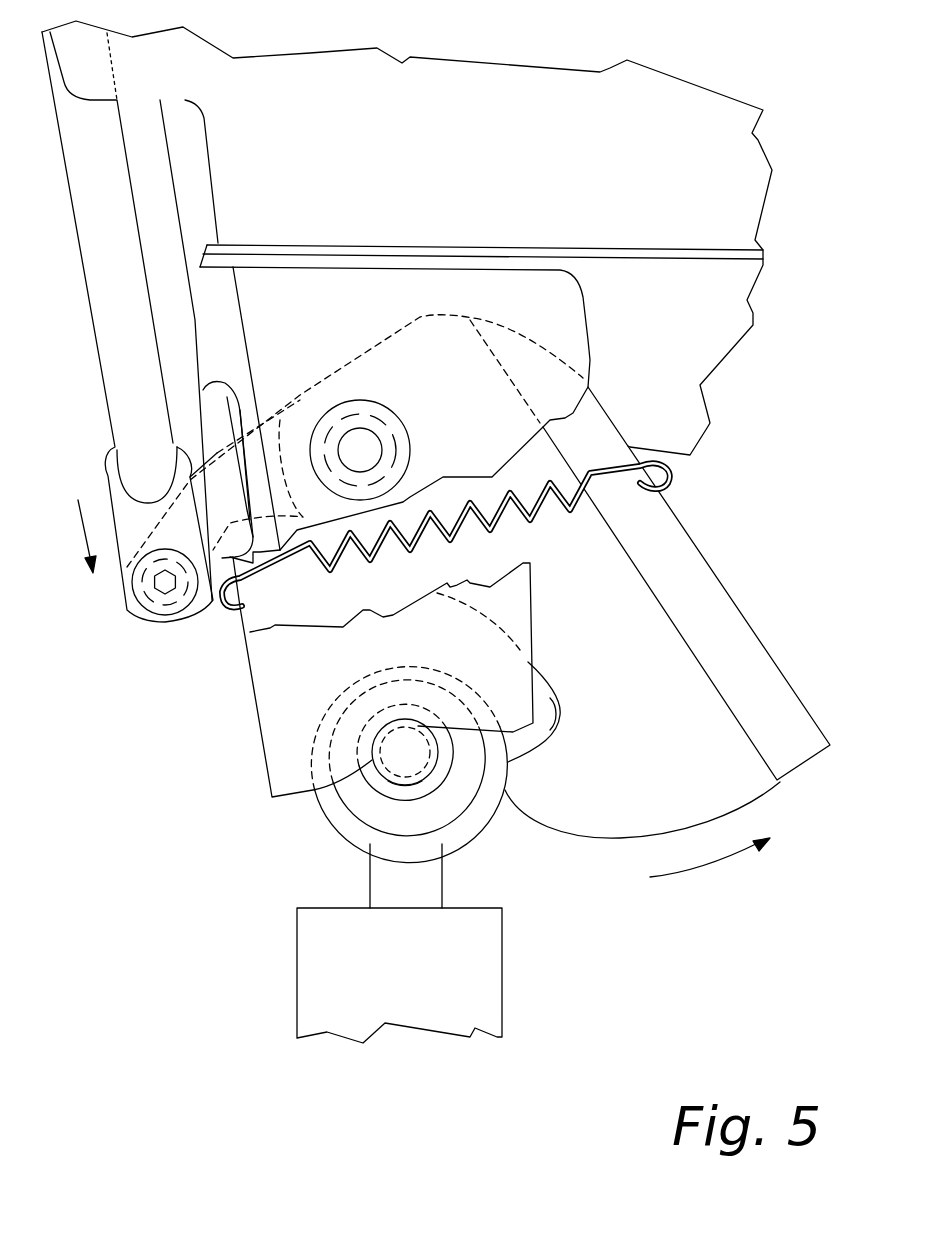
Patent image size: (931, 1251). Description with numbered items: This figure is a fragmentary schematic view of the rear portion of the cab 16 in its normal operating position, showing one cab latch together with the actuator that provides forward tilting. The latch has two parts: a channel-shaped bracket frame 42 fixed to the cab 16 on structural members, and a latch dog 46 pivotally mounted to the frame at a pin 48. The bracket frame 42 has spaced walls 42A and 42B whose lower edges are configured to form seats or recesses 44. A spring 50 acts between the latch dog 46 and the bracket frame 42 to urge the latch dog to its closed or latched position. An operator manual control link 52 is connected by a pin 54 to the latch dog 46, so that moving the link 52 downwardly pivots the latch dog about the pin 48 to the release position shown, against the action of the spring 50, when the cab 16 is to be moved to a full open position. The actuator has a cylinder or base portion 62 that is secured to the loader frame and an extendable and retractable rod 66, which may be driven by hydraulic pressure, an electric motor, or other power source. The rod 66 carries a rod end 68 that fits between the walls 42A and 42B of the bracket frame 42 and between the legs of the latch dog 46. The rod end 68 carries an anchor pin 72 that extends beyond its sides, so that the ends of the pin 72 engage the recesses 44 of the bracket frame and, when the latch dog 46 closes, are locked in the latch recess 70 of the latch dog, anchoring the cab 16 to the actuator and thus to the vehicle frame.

The cab 16 is at (733, 203).
The bracket frame 42 is at (580, 305).
The wall of bracket frame 42A is at (565, 348).
The wall of bracket frame 42B is at (277, 698).
The seat or recess 44 is at (417, 757).
The latch dog 46 is at (693, 600).
The pin 48 is at (357, 457).
The spring 50 is at (600, 528).
The operator manual control link 52 is at (117, 340).
The pin 54 is at (165, 585).
The cylinder or base portion 62 is at (470, 960).
The rod 66 is at (370, 877).
The rod end 68 is at (343, 822).
The latch recess 70 is at (558, 693).
The anchor pin 72 is at (410, 787).